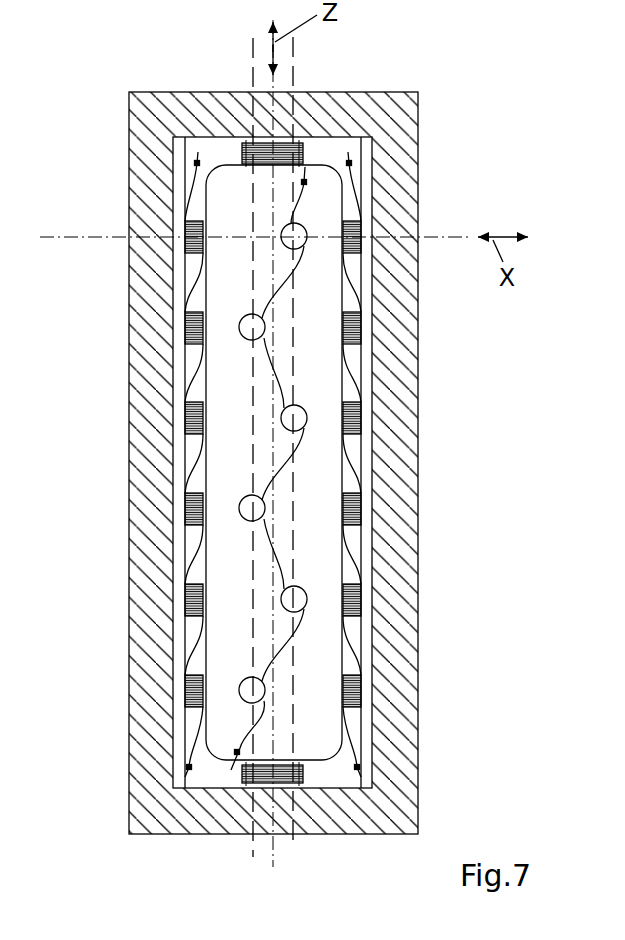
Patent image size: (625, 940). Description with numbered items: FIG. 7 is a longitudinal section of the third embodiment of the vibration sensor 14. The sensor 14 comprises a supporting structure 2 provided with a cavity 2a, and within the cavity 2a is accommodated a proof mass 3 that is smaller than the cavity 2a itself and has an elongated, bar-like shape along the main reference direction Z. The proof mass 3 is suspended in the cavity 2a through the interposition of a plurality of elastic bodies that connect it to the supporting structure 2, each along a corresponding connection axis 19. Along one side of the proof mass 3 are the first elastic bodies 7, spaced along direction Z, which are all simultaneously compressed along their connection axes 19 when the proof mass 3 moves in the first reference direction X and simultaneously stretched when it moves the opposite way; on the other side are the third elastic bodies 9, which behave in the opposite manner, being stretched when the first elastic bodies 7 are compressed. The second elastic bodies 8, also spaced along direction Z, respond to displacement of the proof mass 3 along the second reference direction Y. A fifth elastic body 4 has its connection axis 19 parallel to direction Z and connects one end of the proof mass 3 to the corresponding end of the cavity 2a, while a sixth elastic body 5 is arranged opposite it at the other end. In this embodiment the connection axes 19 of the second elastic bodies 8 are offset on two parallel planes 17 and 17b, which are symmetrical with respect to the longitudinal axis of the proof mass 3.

The supporting structure 2 is at (397, 797).
The cavity 2a is at (330, 795).
The proof mass 3 is at (217, 718).
The fifth elastic body 4 is at (239, 150).
The sixth elastic body 5 is at (236, 775).
The first elastic bodies 7 is at (364, 223).
The second elastic bodies 8 is at (266, 326).
The third elastic bodies 9 is at (186, 320).
The sensor 14 is at (457, 105).
The second reference plane 17 is at (295, 60).
The parallel plane 17b is at (252, 67).
The connection axis 19 is at (80, 239).